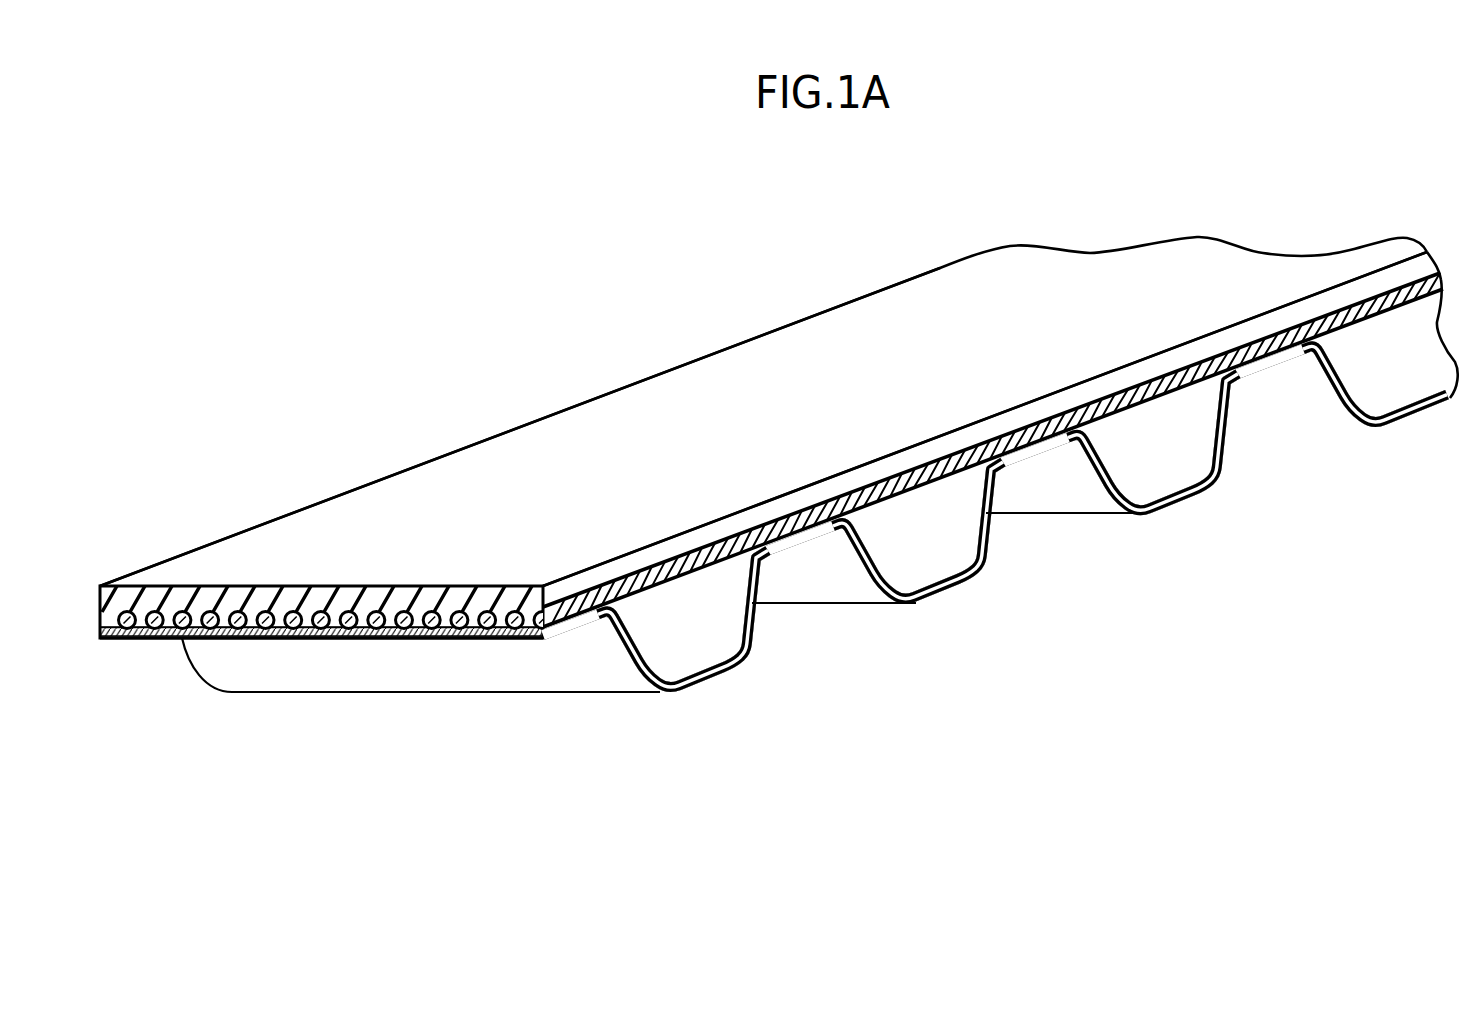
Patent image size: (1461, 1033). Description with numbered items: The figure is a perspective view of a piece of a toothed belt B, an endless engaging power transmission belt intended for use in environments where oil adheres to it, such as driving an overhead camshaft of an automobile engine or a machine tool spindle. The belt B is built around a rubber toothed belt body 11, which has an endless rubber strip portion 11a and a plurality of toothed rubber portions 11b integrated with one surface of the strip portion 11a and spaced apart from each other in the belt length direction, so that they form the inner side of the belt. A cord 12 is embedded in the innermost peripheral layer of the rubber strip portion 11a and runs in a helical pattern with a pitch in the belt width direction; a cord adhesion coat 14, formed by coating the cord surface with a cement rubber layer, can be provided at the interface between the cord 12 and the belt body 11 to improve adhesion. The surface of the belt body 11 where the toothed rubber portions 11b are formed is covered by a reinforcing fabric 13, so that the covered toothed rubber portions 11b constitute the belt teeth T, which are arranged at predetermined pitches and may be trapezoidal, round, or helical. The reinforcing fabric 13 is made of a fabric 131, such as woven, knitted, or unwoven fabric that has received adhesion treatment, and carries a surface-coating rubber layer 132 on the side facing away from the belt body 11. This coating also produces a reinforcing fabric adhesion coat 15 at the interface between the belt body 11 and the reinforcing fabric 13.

The toothed belt B is at (646, 253).
The toothed belt body 11 is at (557, 412).
The rubber strip portion 11a is at (817, 497).
The toothed rubber portions 11b is at (692, 647).
The cord 12 is at (448, 608).
The reinforcing fabric 13 is at (340, 752).
The fabric 131 is at (231, 640).
The surface-coating rubber layer 132 is at (303, 640).
The cord adhesion coat 14 is at (267, 609).
The reinforcing fabric adhesion coat 15 is at (688, 697).
The belt teeth T is at (578, 706).